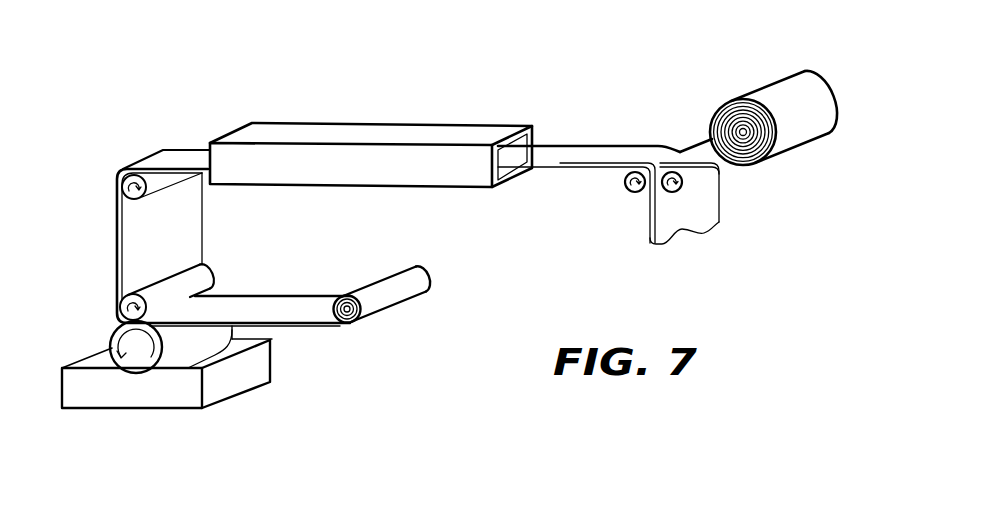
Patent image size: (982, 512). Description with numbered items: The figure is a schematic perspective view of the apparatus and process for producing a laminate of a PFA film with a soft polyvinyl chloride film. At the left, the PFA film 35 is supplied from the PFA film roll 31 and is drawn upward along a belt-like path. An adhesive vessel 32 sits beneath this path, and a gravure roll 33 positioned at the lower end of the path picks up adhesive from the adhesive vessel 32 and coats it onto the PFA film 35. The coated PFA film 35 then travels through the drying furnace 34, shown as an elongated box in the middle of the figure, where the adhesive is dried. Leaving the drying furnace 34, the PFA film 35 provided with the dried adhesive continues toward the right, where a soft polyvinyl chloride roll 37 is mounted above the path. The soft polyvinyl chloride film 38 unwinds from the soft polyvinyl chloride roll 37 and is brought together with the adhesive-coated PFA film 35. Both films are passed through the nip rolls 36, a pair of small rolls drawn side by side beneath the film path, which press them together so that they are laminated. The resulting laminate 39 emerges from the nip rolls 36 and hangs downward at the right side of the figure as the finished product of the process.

The PFA film roll 31 is at (388, 293).
The adhesive vessel 32 is at (167, 392).
The gravure roll 33 is at (123, 320).
The drying furnace 34 is at (462, 132).
The PFA film 35 is at (117, 217).
The nip rolls 36 is at (672, 193).
The soft polyvinyl chloride roll 37 is at (786, 85).
The soft polyvinyl chloride film 38 is at (710, 157).
The laminate 39 is at (677, 225).